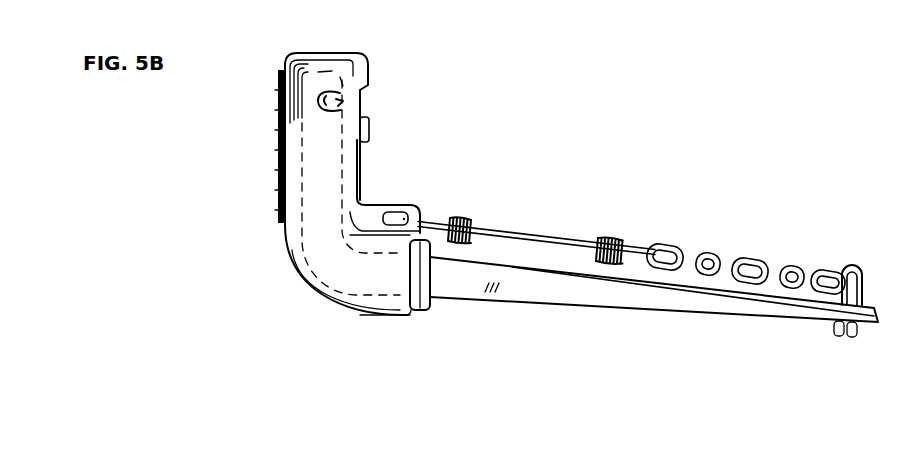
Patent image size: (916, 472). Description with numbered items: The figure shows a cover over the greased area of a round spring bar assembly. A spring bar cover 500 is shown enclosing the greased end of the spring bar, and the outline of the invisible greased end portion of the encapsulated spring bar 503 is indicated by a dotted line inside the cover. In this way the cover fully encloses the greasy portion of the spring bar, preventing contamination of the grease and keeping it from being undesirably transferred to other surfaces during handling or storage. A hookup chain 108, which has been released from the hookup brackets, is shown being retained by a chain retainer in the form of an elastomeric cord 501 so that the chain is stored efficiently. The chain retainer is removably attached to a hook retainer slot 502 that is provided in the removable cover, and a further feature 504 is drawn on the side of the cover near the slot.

The spring bar cover 500 is at (278, 160).
The elastomeric cord 501 is at (520, 230).
The hook retainer slot 502 is at (392, 208).
The spring bar 503 is at (300, 253).
The latch 504 is at (370, 123).
The hookup chain 108 is at (757, 257).